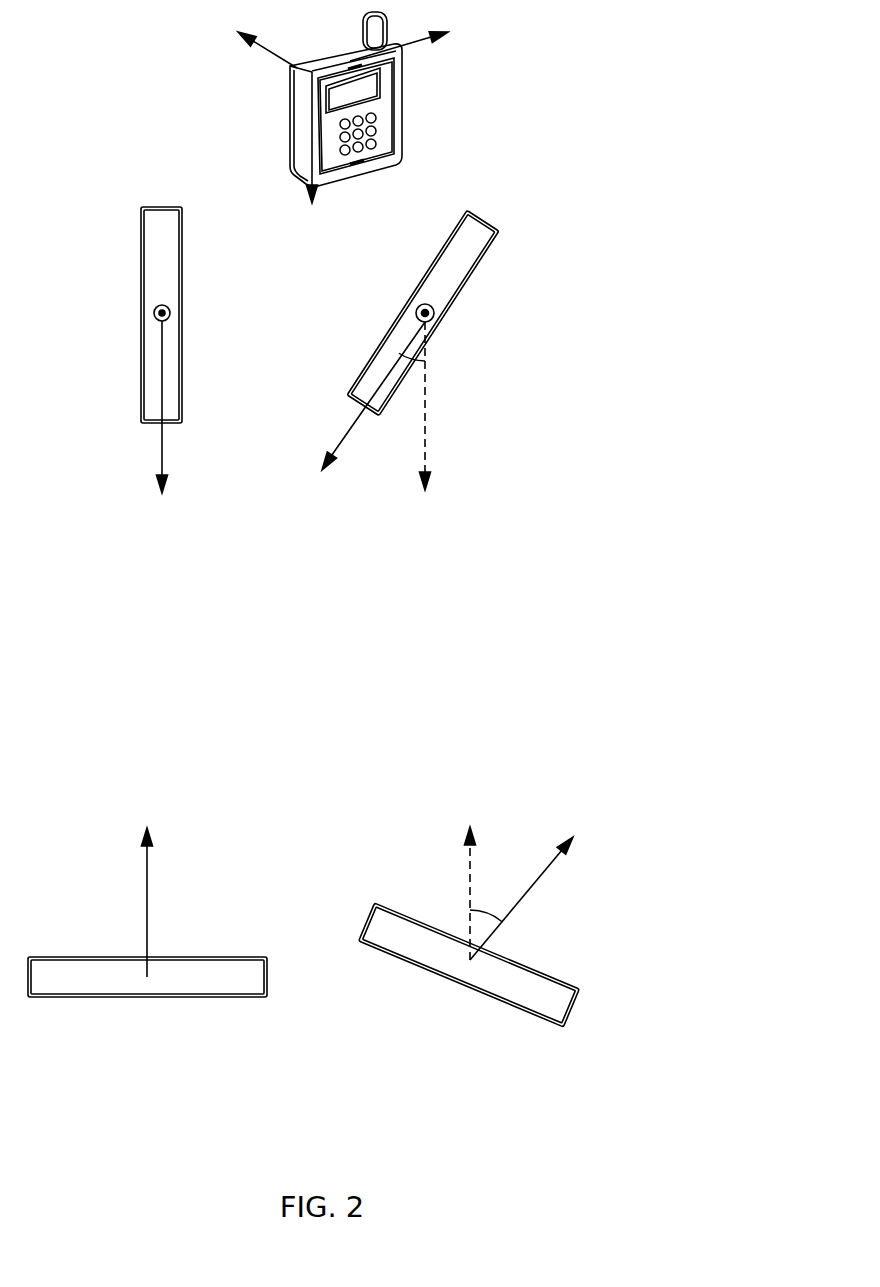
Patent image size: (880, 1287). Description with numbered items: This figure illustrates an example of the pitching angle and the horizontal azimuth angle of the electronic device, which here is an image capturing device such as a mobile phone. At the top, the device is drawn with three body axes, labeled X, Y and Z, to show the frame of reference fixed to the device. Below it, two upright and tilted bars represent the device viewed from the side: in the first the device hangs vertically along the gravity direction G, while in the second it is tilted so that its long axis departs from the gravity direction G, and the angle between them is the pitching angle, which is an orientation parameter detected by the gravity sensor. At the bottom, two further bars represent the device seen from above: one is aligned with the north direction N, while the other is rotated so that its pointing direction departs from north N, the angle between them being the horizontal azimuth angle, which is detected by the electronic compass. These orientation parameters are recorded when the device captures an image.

The X axis of the mobile terminal X is at (414, 36).
The Y axis of the mobile terminal Y is at (310, 156).
The Z axis of the mobile terminal Z is at (251, 37).
The gravity direction G is at (288, 435).
The geomagnetic north direction N is at (309, 879).